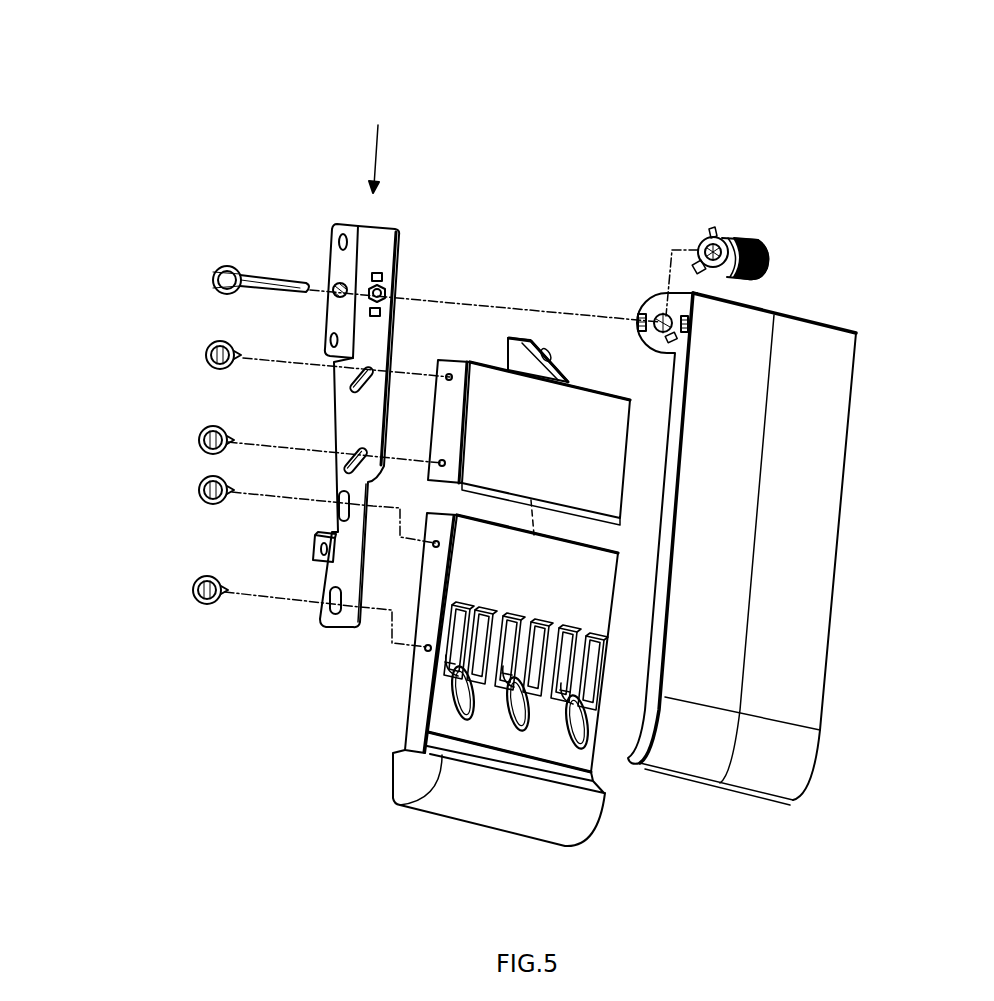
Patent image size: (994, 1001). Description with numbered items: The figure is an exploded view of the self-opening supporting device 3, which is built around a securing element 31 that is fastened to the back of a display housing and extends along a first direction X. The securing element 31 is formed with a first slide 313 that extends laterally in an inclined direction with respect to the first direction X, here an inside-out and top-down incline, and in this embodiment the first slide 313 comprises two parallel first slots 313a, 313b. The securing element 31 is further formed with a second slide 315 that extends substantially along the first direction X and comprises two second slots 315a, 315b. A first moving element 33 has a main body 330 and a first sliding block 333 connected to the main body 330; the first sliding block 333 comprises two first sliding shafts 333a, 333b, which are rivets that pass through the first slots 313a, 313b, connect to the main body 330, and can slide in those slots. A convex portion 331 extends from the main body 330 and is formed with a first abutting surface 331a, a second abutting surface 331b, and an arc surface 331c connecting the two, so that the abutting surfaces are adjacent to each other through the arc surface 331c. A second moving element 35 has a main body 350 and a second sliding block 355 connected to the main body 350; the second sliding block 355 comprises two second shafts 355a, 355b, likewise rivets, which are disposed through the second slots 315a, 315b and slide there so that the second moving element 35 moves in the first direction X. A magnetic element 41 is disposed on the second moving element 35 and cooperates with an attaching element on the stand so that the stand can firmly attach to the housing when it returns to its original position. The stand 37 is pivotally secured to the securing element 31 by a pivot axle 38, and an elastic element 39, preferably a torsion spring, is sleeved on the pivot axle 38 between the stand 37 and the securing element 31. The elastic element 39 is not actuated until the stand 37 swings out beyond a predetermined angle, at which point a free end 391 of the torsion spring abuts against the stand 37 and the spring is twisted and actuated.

The self-opening supporting device 3 is at (300, 96).
The securing element 31 is at (382, 246).
The first slide 313 is at (254, 374).
The first slot 313a is at (346, 375).
The first slot 313b is at (350, 452).
The second slide 315 is at (234, 513).
The second slot 315a is at (340, 506).
The second slot 315b is at (335, 603).
The pivot axle 38 is at (230, 266).
The first sliding block 333 is at (102, 345).
The first sliding shaft 333a is at (206, 353).
The first sliding shaft 333b is at (200, 438).
The second sliding block 355 is at (97, 478).
The second shaft 355a is at (199, 489).
The second shaft 355b is at (193, 584).
The first moving element 33 is at (587, 384).
The main body 330 is at (611, 412).
The convex portion 331 is at (605, 250).
The first abutting surface 331a is at (562, 372).
The second abutting surface 331b is at (499, 345).
The arc surface 331c is at (540, 350).
The second moving element 35 is at (328, 689).
The main body 350 is at (422, 677).
The magnetic element 41 is at (455, 698).
The stand 37 is at (820, 450).
The elastic element 39 is at (752, 246).
The free end 391 is at (712, 230).